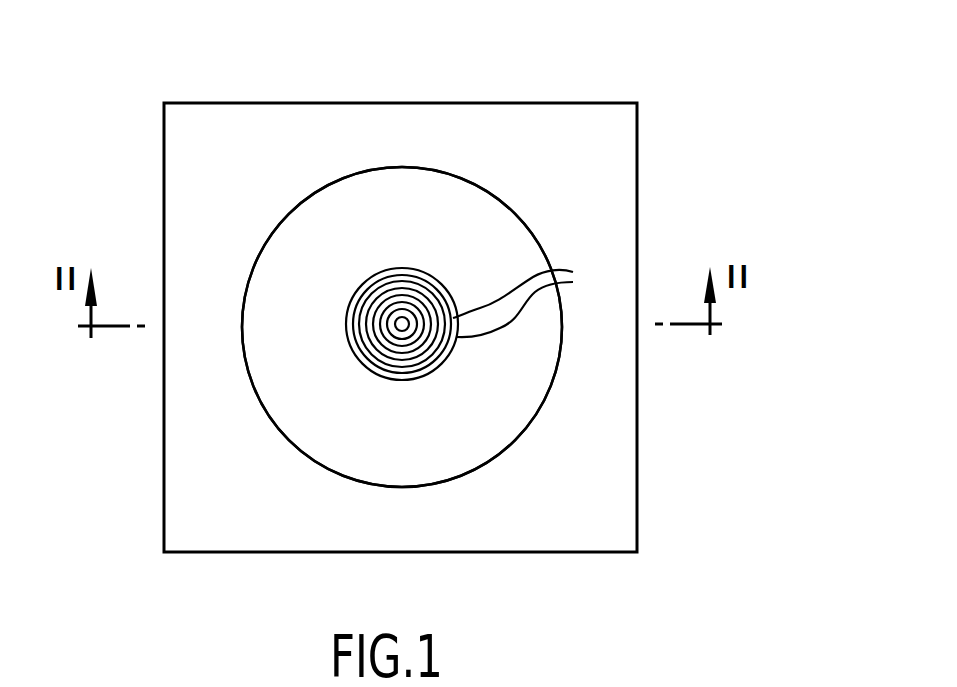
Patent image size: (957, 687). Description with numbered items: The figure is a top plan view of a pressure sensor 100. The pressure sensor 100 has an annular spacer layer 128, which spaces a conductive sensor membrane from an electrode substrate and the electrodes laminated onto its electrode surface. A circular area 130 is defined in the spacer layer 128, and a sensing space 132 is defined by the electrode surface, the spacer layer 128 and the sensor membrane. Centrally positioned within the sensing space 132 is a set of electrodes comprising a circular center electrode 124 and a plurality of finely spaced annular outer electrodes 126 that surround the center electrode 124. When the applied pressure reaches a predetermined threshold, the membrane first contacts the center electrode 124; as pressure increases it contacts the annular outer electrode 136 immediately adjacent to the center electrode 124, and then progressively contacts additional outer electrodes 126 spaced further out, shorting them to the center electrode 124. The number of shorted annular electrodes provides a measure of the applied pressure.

The pressure sensor 100 is at (606, 58).
The center electrode 124 is at (408, 320).
The outer electrodes 126 is at (537, 296).
The spacer layer 128 is at (624, 459).
The circular area 130 is at (303, 452).
The sensing space 132 is at (395, 457).
The annular outer electrode 136 is at (402, 317).